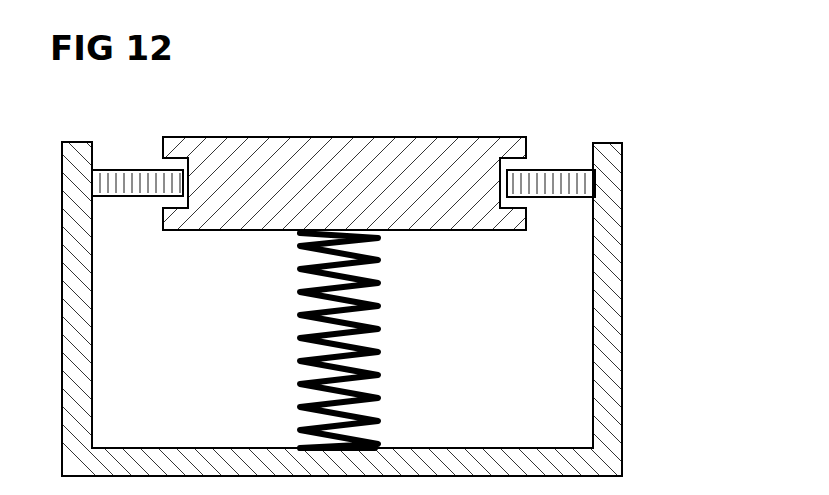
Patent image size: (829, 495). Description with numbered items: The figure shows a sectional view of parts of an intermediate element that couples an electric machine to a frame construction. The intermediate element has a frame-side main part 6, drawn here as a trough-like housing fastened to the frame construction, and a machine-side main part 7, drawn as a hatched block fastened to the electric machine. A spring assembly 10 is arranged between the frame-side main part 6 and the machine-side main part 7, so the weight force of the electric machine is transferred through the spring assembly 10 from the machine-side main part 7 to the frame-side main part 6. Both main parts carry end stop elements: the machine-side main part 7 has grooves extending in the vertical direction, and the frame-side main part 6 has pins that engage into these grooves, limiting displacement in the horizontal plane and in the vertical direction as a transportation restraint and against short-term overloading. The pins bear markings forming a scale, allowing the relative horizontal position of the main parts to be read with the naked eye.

The frame-side main part 6 is at (612, 452).
The machine-side main part 7 is at (355, 148).
The spring assembly 10 is at (380, 350).